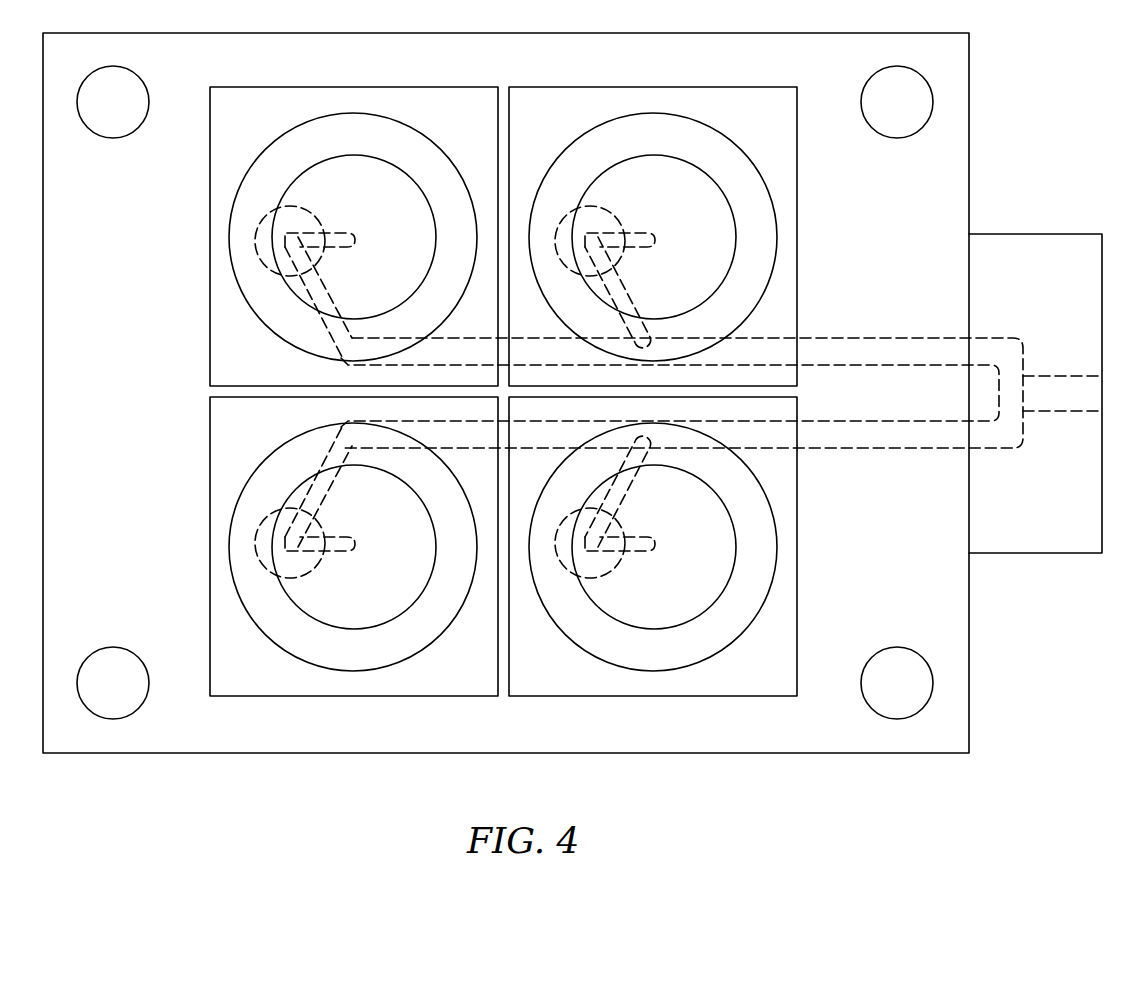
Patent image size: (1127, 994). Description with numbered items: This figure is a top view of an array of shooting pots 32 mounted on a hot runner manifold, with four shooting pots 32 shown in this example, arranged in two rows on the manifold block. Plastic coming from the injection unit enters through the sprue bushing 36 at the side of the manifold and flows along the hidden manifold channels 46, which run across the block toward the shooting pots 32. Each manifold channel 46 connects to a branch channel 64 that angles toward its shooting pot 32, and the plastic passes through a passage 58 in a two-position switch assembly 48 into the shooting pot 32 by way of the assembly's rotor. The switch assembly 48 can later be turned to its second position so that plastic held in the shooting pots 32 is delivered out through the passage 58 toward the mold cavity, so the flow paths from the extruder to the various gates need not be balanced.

The shooting pot 32 is at (403, 178).
The sprue bushing 36 is at (1068, 388).
The manifold channel 46 is at (853, 350).
The two-position switch assembly 48 is at (618, 213).
The passage 58 is at (341, 243).
The branch channel 64 is at (323, 300).